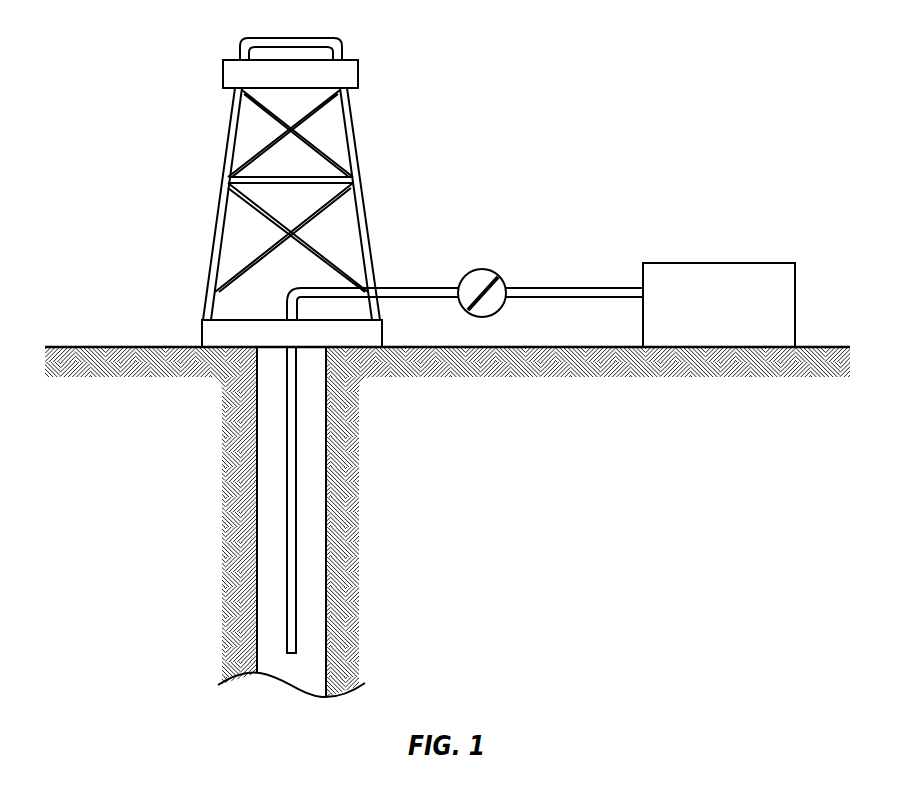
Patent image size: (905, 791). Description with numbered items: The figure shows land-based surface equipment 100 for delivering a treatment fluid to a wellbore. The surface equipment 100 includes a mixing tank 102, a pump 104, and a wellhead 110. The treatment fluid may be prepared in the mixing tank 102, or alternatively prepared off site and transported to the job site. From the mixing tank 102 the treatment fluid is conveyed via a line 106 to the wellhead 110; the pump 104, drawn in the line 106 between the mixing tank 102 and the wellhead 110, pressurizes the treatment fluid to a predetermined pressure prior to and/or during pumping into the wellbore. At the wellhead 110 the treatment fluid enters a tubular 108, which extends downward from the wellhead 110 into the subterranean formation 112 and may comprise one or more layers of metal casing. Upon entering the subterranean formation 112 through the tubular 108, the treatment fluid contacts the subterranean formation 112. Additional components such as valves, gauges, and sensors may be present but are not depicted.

The surface equipment 100 is at (137, 56).
The mixing tank 102 is at (720, 263).
The pump 104 is at (481, 269).
The line 106 is at (397, 288).
The tubular 108 is at (295, 480).
The wellhead 110 is at (202, 333).
The subterranean formation 112 is at (192, 484).